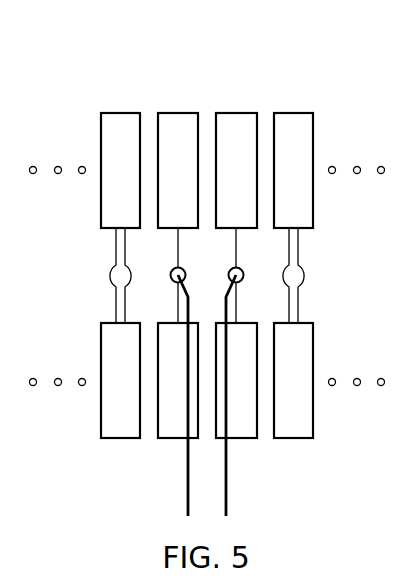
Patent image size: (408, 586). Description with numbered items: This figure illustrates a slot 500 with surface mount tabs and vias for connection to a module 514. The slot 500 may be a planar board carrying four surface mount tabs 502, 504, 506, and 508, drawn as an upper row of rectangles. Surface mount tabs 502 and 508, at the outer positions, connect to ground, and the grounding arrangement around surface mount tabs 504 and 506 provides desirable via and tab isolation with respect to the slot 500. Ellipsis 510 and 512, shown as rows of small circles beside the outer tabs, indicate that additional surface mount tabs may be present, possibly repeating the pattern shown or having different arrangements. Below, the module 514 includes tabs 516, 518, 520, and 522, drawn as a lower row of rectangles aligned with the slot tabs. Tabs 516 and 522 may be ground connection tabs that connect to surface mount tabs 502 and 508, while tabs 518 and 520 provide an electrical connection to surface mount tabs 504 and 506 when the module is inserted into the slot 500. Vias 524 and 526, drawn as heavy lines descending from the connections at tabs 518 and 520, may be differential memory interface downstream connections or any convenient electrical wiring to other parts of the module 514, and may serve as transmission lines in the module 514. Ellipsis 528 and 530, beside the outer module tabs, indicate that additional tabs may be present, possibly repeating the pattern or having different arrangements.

The slot 500 is at (201, 73).
The surface mount tab 502 is at (100, 199).
The surface mount tab 504 is at (167, 112).
The surface mount tab 506 is at (246, 112).
The surface mount tab 508 is at (313, 198).
The ellipsis 510 is at (57, 166).
The ellipsis 512 is at (358, 166).
The module 514 is at (314, 479).
The tab 516 is at (100, 355).
The tab 518 is at (170, 441).
The tab 520 is at (243, 441).
The tab 522 is at (313, 352).
The via 524 is at (185, 500).
The via 526 is at (227, 500).
The ellipsis 528 is at (57, 386).
The ellipsis 530 is at (358, 386).